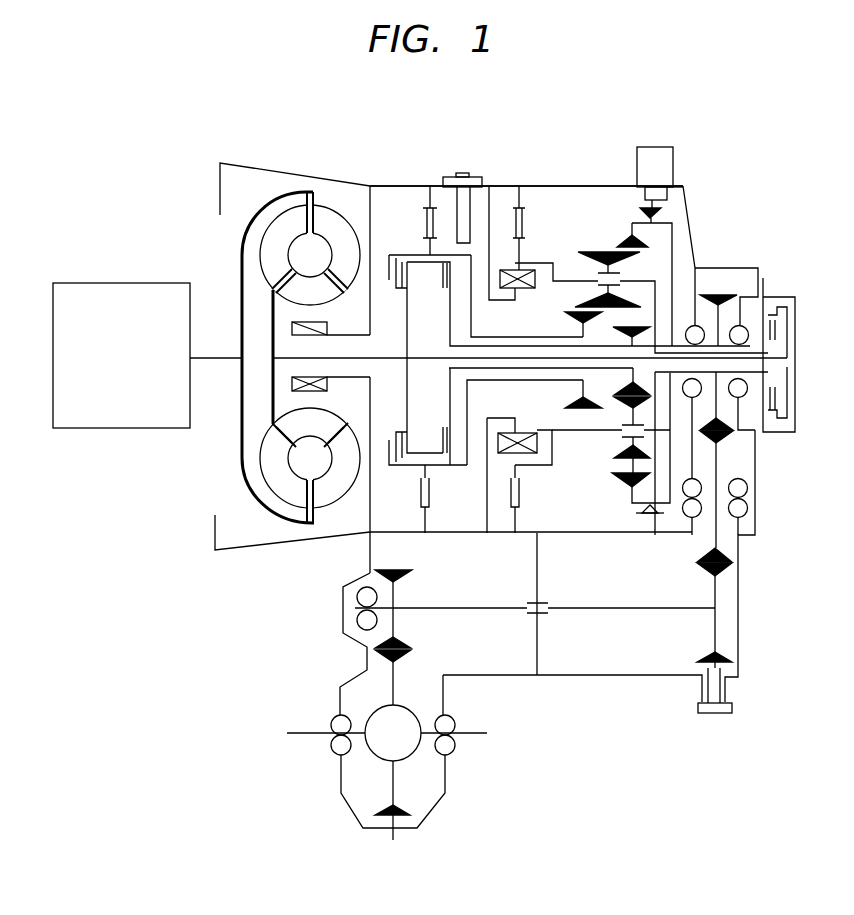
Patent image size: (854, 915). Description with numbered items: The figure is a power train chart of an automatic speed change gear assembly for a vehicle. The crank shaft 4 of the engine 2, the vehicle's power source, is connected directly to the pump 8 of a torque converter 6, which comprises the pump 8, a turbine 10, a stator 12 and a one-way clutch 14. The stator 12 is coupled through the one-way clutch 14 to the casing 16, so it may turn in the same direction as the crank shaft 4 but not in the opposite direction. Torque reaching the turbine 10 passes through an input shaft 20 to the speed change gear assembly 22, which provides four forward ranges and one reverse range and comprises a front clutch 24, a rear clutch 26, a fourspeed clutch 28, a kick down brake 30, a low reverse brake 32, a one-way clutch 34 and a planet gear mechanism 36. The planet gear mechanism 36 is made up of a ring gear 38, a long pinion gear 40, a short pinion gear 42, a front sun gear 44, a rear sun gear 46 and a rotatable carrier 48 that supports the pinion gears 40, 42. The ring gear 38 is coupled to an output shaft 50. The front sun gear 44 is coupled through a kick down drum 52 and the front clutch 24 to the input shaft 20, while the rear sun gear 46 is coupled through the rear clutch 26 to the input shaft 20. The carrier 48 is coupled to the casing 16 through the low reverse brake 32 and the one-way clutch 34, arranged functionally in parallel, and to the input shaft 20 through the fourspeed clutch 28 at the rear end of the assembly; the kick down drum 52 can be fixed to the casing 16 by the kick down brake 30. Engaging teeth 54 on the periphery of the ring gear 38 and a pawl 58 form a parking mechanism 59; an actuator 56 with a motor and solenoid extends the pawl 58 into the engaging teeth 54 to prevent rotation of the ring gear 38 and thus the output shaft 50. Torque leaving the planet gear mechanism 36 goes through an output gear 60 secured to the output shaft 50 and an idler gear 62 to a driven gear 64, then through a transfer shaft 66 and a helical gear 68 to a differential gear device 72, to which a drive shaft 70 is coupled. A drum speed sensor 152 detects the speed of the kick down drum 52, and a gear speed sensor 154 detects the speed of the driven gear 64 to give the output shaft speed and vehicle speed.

The engine 2 is at (129, 367).
The crank shaft 4 is at (215, 359).
The torque converter 6 is at (500, 319).
The pump 8 is at (325, 225).
The turbine 10 is at (270, 243).
The stator 12 is at (308, 293).
The one-way clutch 14 is at (276, 374).
The casing 16 is at (509, 186).
The input shaft 20 is at (272, 382).
The speed change gear assembly 22 is at (560, 180).
The front clutch 24 is at (395, 465).
The rear clutch 26 is at (448, 465).
The fourspeed clutch 28 is at (779, 297).
The kick down brake 30 is at (431, 508).
The low reverse brake 32 is at (515, 507).
The one-way clutch 34 is at (524, 444).
The planet gear mechanism 36 is at (562, 252).
The ring gear 38 is at (620, 232).
The long pinion gear 40 is at (601, 251).
The short pinion gear 42 is at (616, 452).
The front sun gear 44 is at (565, 402).
The rear sun gear 46 is at (620, 391).
The carrier 48 is at (650, 282).
The output shaft 50 is at (724, 332).
The kick down drum 52 is at (435, 240).
The engaging teeth 54 is at (662, 211).
The actuator 56 is at (657, 150).
The pawl 58 is at (672, 195).
The parking mechanism 59 is at (686, 146).
The output gear 60 is at (718, 296).
The idler gear 62 is at (727, 437).
The driven gear 64 is at (699, 577).
The transfer shaft 66 is at (626, 607).
The helical gear 68 is at (396, 624).
The drive shaft 70 is at (302, 735).
The differential gear device 72 is at (378, 750).
The drum speed sensor 152 is at (463, 174).
The gear speed sensor 154 is at (712, 714).